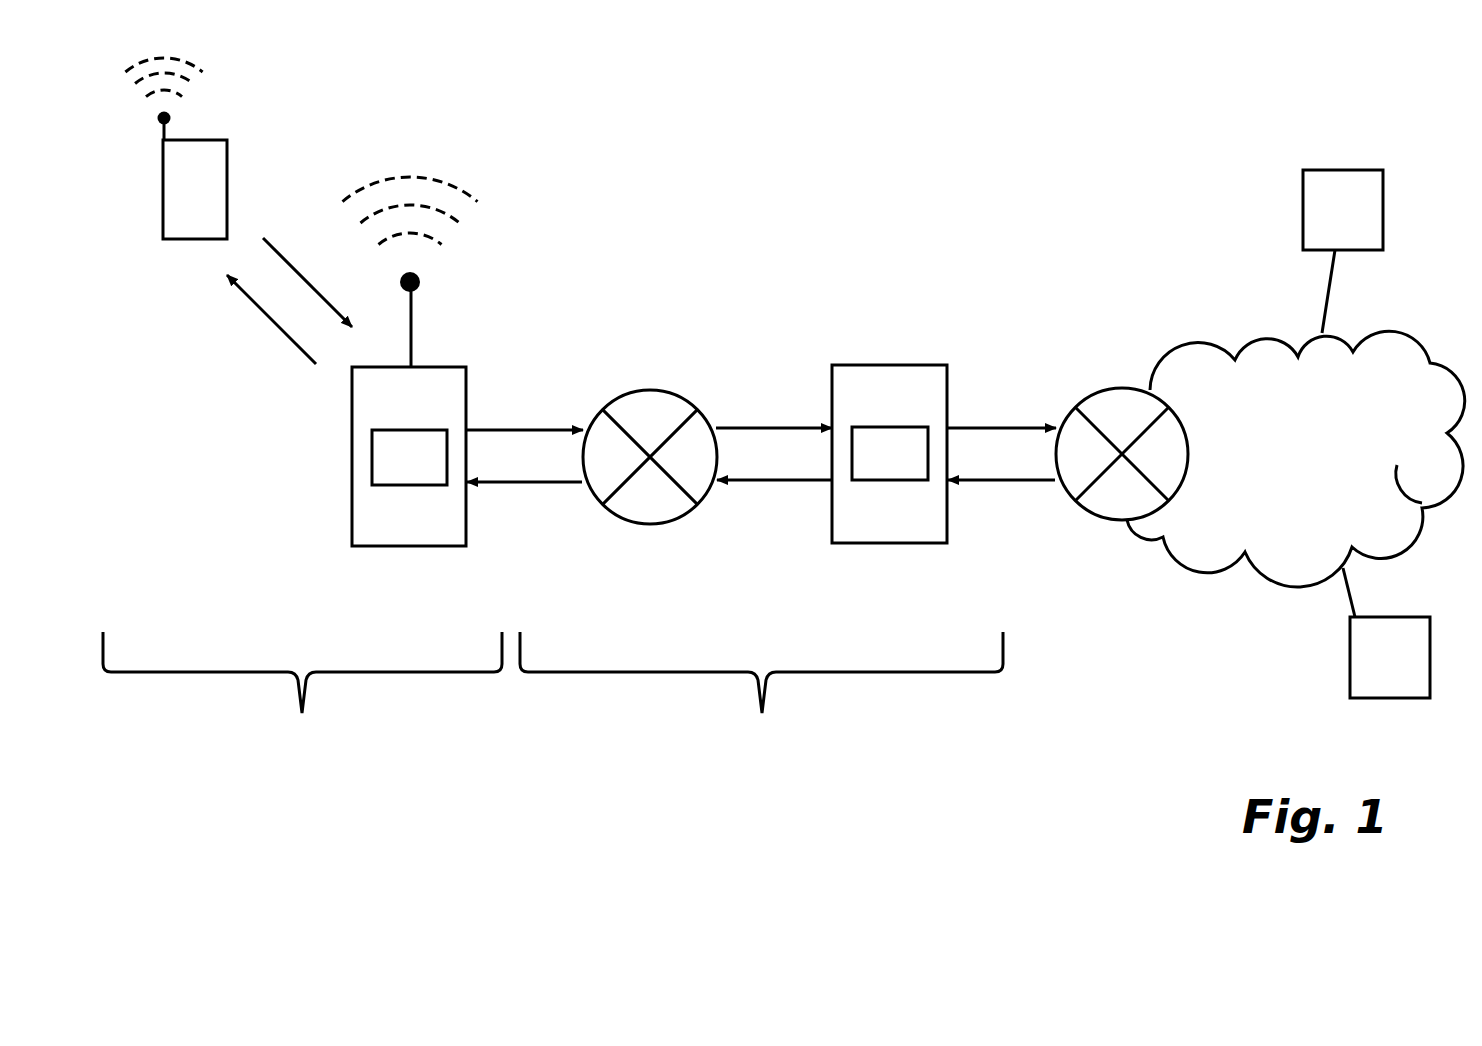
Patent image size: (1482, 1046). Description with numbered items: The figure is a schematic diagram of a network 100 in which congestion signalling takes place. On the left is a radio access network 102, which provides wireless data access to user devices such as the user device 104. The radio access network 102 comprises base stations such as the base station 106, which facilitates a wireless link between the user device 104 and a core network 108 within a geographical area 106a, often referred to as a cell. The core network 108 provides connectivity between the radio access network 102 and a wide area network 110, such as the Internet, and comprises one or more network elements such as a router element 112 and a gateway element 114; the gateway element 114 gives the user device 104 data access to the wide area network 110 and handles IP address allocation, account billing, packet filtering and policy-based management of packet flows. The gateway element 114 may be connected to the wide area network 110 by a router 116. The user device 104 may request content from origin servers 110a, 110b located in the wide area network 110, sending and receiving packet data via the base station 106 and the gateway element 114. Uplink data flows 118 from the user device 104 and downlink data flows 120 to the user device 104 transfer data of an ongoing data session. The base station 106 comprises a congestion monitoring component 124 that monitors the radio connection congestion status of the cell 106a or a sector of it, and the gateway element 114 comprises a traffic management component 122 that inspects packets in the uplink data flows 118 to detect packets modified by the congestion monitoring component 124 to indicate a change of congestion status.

The network 100 is at (176, 776).
The radio access network 102 is at (302, 698).
The user device 104 is at (188, 240).
The base station 106 is at (397, 397).
The geographical area 106a is at (247, 472).
The core network 108 is at (761, 697).
The wide area network 110 is at (1296, 434).
The origin server 110a is at (1343, 251).
The origin server 110b is at (1386, 633).
The router element 112 is at (657, 524).
The gateway element 114 is at (873, 489).
The router 116 is at (1110, 519).
The uplink data flows 118 is at (281, 253).
The downlink data flows 120 is at (280, 331).
The traffic management component 122 is at (890, 453).
The congestion monitoring component 124 is at (409, 457).